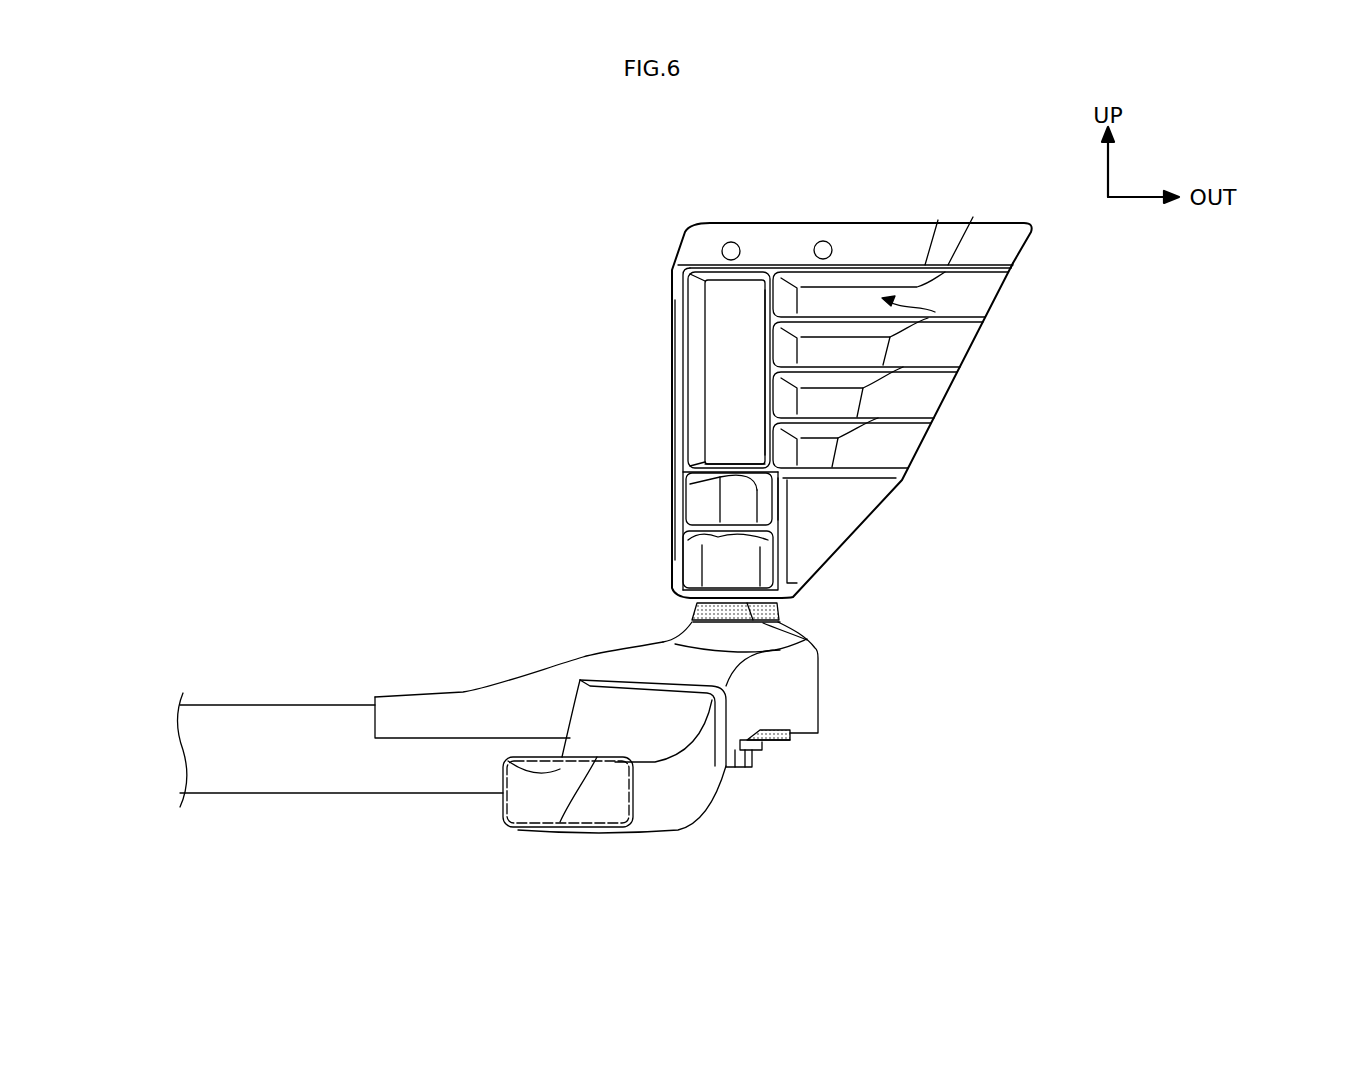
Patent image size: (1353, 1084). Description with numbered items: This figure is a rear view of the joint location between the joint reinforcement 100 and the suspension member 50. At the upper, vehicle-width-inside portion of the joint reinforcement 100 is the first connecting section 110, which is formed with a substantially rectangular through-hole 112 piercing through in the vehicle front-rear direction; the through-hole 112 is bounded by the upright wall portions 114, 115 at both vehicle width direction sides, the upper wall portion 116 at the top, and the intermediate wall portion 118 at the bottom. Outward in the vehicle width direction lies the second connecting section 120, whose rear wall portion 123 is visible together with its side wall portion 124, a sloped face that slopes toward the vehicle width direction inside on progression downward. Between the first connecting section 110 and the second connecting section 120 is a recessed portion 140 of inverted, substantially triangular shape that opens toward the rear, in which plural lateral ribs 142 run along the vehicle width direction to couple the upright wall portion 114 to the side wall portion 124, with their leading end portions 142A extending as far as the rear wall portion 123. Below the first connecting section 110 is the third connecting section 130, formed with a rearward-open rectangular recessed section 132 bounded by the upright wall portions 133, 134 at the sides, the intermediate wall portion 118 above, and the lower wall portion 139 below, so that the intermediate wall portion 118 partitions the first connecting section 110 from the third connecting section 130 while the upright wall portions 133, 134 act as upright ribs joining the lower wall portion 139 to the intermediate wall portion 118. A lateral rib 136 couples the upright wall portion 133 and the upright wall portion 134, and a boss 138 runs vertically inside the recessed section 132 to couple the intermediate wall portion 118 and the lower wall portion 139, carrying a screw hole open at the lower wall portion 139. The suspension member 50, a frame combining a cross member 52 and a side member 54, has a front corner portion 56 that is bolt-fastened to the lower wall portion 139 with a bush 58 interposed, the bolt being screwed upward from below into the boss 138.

The suspension member 50 is at (513, 667).
The cross member 52 is at (313, 705).
The side member 54 is at (698, 790).
The corner portion 56 is at (807, 697).
The bush 58 is at (757, 622).
The joint reinforcement 100 is at (866, 184).
The first connecting section 110 is at (692, 258).
The through-hole 112 is at (759, 331).
The upright wall portion 114 is at (767, 355).
The upright wall portion 115 is at (693, 392).
The upper wall portion 116 is at (748, 270).
The intermediate wall portion 118 is at (733, 466).
The second connecting section 120 is at (981, 208).
The rear wall portion 123 is at (1008, 242).
The side wall portion 124 is at (950, 226).
The third connecting section 130 is at (670, 529).
The recessed section 132 is at (692, 567).
The upright wall portion 133 is at (683, 498).
The upright wall portion 134 is at (770, 506).
The lateral rib 136 is at (788, 549).
The boss 138 is at (752, 562).
The lower wall portion 139 is at (782, 603).
The recessed portion 140 is at (935, 312).
The lateral ribs 142 is at (905, 264).
The leading end portions 142A is at (983, 268).